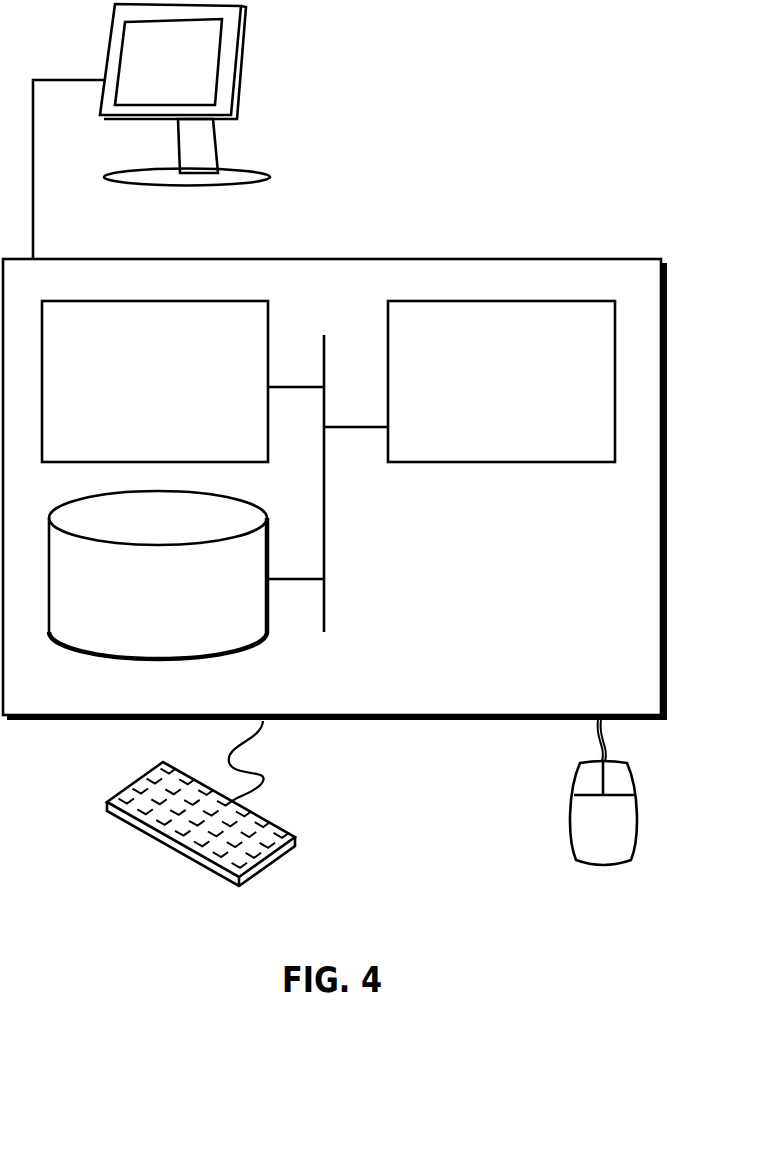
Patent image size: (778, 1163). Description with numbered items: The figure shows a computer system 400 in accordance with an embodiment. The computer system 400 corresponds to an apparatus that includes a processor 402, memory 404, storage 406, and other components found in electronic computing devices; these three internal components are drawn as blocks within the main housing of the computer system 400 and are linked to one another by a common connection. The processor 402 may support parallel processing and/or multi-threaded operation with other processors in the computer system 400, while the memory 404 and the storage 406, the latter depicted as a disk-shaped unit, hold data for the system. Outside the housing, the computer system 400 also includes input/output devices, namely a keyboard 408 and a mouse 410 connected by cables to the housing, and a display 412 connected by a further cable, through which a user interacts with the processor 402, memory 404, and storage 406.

The computer system 400 is at (379, 238).
The processor 402 is at (484, 393).
The memory 404 is at (177, 392).
The storage device 406 is at (141, 604).
The keyboard 408 is at (124, 822).
The mouse 410 is at (582, 835).
The display monitor 412 is at (151, 131).